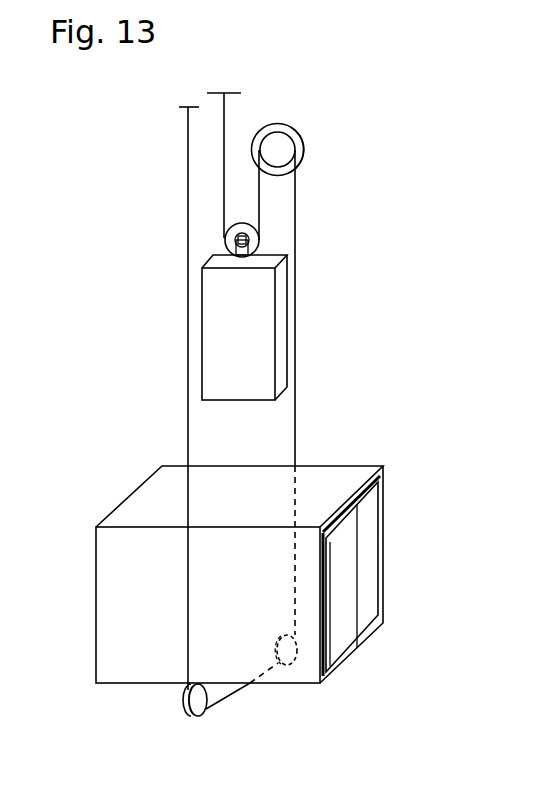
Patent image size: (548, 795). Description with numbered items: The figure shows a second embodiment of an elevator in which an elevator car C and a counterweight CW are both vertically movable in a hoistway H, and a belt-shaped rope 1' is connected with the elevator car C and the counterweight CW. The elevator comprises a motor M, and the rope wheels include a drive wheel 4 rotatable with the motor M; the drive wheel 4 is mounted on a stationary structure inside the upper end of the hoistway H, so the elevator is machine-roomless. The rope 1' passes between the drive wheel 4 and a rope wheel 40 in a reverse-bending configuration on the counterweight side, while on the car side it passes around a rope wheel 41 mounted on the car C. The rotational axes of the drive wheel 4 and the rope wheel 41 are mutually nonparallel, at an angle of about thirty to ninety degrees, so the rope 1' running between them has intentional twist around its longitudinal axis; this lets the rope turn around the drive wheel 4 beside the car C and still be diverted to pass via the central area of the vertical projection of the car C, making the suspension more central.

The drive wheel 4 is at (275, 142).
The motor M is at (303, 152).
The rope wheel 40 is at (259, 238).
The rope wheel 41 is at (290, 655).
The counterweight CW is at (287, 325).
The elevator car C is at (383, 558).
The hoistway H is at (171, 398).
The rope 1' is at (221, 364).